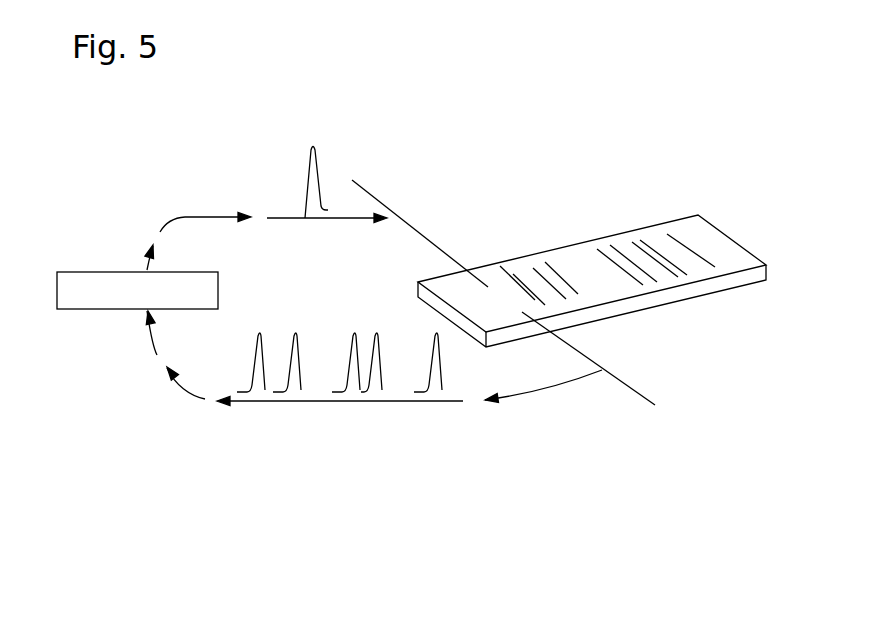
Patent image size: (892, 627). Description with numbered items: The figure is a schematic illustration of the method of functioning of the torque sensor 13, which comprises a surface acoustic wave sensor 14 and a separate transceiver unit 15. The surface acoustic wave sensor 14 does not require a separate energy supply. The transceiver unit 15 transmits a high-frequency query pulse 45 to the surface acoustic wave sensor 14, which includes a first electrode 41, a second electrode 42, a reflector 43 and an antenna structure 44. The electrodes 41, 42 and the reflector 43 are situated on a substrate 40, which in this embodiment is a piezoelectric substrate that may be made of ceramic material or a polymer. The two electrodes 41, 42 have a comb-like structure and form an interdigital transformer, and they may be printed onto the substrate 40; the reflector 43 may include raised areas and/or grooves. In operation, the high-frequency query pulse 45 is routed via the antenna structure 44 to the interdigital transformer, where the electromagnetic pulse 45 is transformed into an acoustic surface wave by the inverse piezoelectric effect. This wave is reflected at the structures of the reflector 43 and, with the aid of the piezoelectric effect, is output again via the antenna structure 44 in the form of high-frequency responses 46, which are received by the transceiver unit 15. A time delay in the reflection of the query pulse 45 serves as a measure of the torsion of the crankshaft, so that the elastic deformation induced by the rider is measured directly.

The torque sensor 13 is at (152, 172).
The surface acoustic wave sensor 14 is at (592, 278).
The transceiver unit 15 is at (87, 295).
The substrate 40 is at (636, 274).
The first electrode 41 is at (542, 308).
The second electrode 42 is at (578, 314).
The reflector 43 is at (688, 278).
The antenna structure 44 is at (377, 197).
The high-frequency query pulse 45 is at (302, 172).
The high-frequency responses 46 is at (338, 422).